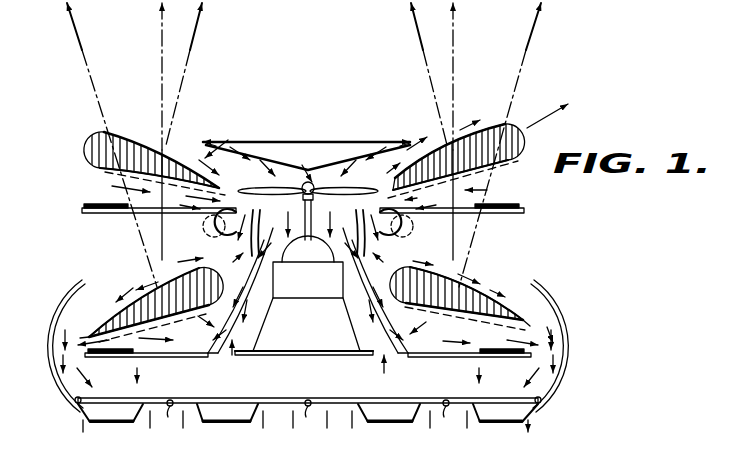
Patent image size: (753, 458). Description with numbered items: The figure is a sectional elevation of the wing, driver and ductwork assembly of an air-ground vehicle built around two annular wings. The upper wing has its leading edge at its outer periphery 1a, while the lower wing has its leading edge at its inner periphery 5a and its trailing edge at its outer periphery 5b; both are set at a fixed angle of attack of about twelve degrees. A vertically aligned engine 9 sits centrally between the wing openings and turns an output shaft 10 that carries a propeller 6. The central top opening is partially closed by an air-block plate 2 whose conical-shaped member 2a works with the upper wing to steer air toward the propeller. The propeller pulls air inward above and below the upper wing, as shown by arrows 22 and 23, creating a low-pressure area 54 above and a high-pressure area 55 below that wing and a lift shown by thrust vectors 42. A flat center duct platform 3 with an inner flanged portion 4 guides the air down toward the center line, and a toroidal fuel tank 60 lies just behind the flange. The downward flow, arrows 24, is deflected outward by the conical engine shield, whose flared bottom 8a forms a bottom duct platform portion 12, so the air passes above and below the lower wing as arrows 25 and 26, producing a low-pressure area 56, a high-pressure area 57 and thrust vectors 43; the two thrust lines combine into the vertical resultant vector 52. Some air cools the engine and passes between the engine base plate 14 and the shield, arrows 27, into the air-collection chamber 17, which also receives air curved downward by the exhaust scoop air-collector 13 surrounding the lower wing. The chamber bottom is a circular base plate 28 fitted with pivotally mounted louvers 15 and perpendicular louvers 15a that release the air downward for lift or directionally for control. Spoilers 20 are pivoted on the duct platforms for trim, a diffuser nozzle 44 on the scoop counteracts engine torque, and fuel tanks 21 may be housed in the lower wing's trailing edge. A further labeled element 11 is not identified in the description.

The outer periphery 1a is at (86, 143).
The air-block plate 2 is at (334, 142).
The conical-shaped member 2a is at (230, 143).
The center duct platform 3 is at (96, 214).
The inner flanged portion 4 is at (237, 214).
The inner periphery 5a is at (256, 252).
The outer periphery 5b is at (89, 340).
The propeller 6 is at (314, 193).
The bottom portion of engine shield 8a is at (212, 363).
The engine 9 is at (300, 291).
The output shaft 10 is at (304, 214).
The air passage 11 is at (252, 358).
The bottom duct platform portion 12 is at (152, 360).
The exhaust scoop air-collector 13 is at (50, 317).
The engine base plate 14 is at (332, 357).
The airflow control louvers 15 is at (122, 424).
The airflow control louvers 15a is at (168, 410).
The air-collection chamber 17 is at (292, 389).
The spoilers 20 is at (100, 201).
The fuel tanks 21 is at (99, 317).
The arrows 22 is at (178, 147).
The arrows 23 is at (491, 190).
The arrows 24 is at (256, 221).
The arrows 25 is at (193, 258).
The arrows 26 is at (176, 337).
The arrows 27 is at (93, 382).
The base plate 28 is at (304, 372).
The thrust vectors 42 is at (182, 82).
The thrust vectors 43 is at (82, 66).
The diffuser nozzle 44 is at (56, 392).
The resultant vector 52 is at (162, 48).
The low-pressure area 54 is at (136, 136).
The high-pressure area 55 is at (97, 169).
The low-pressure area 56 is at (151, 288).
The high-pressure area 57 is at (166, 320).
The toroidal-shaped fuel tank 60 is at (203, 226).